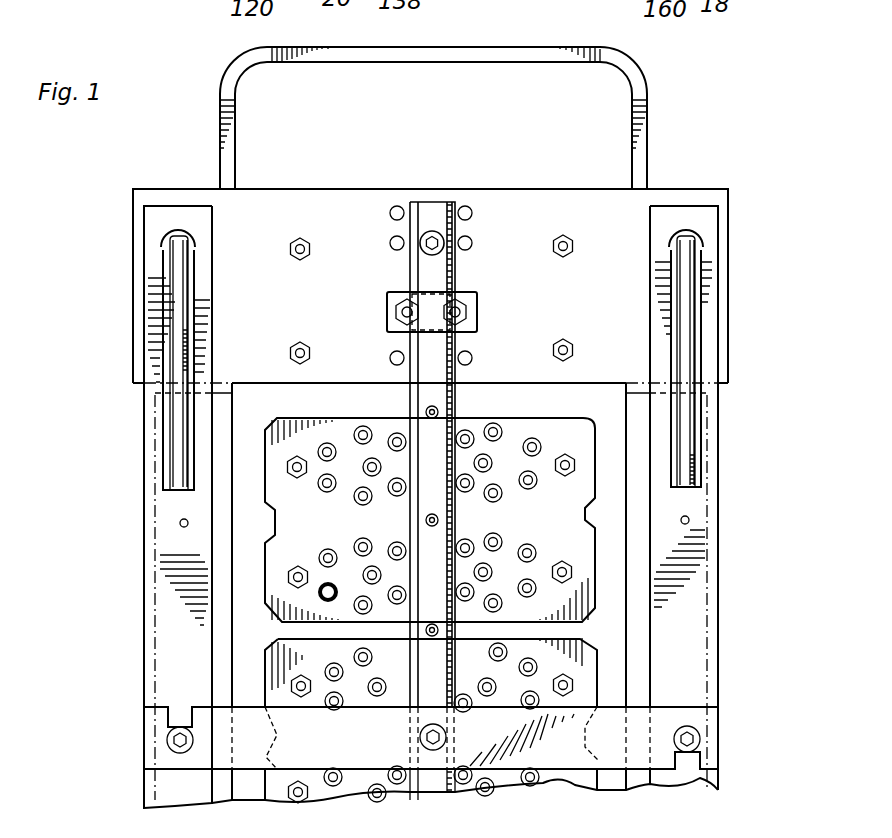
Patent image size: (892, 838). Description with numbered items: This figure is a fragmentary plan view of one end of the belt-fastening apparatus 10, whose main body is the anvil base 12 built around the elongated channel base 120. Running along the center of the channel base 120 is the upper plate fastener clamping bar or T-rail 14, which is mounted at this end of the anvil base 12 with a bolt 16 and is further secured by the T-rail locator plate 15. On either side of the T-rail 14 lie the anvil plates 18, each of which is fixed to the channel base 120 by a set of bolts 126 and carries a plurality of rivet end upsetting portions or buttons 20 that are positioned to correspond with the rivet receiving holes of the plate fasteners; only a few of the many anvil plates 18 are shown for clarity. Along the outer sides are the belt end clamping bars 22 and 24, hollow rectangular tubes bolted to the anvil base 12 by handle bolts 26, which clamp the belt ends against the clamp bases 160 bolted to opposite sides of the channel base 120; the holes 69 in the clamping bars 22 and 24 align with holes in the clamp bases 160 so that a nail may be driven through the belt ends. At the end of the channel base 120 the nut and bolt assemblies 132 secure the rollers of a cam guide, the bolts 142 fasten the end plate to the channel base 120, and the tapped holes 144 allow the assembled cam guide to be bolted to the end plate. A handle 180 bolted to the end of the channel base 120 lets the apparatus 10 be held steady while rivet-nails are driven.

The apparatus 10 is at (667, 149).
The anvil base 12 is at (636, 375).
The upper plate fastener clamping bar or T-rail 14 is at (428, 400).
The T-rail locator plate 15 is at (700, 712).
The bolt 16 is at (428, 232).
The anvil plates 18 is at (275, 549).
The rivet end upsetting portions or buttons 20 is at (317, 549).
The belt end clamping bar 22 is at (177, 609).
The belt end clamping bar 24 is at (695, 632).
The handle bolts 26 is at (178, 267).
The holes 69 is at (180, 523).
The channel base 120 is at (252, 400).
The bolts 126 is at (296, 455).
The nut and bolt assembly 132 is at (405, 296).
The bolts 142 is at (563, 338).
The tapped holes 144 is at (390, 213).
The clamp bases 160 is at (638, 592).
The handle 180 is at (558, 28).